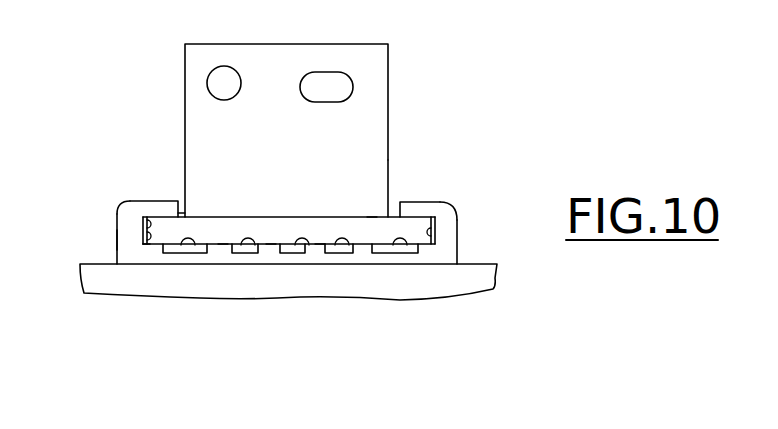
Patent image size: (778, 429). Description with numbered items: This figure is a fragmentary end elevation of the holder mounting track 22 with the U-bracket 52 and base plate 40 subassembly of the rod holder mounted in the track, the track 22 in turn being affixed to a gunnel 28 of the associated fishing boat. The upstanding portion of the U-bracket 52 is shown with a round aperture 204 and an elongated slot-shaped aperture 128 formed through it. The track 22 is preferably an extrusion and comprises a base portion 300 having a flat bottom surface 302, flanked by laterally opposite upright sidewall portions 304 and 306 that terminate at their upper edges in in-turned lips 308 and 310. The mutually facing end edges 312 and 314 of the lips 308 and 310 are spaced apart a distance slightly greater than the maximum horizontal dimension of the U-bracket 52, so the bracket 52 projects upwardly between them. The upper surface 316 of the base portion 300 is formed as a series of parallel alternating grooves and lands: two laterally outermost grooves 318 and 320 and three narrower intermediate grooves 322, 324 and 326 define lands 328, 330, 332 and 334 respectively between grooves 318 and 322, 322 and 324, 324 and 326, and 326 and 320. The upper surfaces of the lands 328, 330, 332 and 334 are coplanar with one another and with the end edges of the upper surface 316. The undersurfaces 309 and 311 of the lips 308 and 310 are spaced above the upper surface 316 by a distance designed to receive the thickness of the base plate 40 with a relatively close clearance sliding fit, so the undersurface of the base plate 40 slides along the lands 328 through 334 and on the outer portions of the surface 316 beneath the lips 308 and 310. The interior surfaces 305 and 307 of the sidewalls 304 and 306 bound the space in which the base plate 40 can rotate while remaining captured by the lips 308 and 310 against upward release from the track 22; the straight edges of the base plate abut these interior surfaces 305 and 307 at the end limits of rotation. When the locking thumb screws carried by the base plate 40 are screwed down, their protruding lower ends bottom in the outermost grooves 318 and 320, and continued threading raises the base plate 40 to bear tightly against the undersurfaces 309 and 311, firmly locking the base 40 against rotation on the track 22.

The U-bracket 52 is at (202, 45).
The circular aperture 204 is at (228, 71).
The slot aperture 128 is at (330, 77).
The mounting track 22 is at (119, 205).
The sidewall interior surface 305 is at (115, 222).
The upright sidewall portion 304 is at (116, 238).
The in-turned lip 308 is at (140, 200).
The end edge of lip 312 is at (190, 215).
The undersurface of lip 309 is at (158, 220).
The upper surface of base portion 316 is at (144, 244).
The base plate 40 is at (283, 217).
The base portion 300 is at (221, 254).
The land 328 is at (223, 243).
The land 330 is at (271, 245).
The land 334 is at (372, 217).
The land 332 is at (320, 244).
The laterally outermost groove 318 is at (182, 254).
The intermediate groove 322 is at (250, 254).
The intermediate groove 324 is at (312, 246).
The intermediate groove 326 is at (341, 254).
The flat bottom surface 302 is at (397, 254).
The laterally outermost groove 320 is at (411, 254).
The end edge of lip 314 is at (395, 210).
The in-turned lip 310 is at (408, 201).
The undersurface of lip 311 is at (412, 222).
The sidewall interior surface 307 is at (453, 211).
The upright sidewall portion 306 is at (458, 233).
The gunnel 28 is at (493, 289).